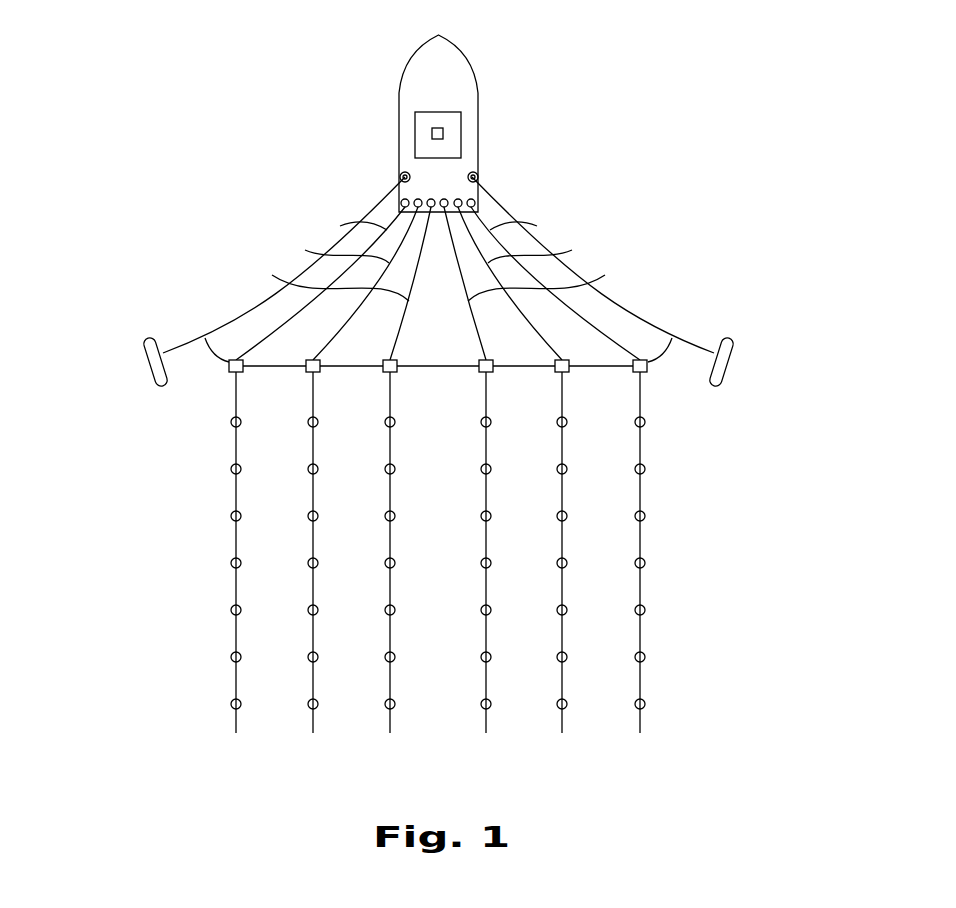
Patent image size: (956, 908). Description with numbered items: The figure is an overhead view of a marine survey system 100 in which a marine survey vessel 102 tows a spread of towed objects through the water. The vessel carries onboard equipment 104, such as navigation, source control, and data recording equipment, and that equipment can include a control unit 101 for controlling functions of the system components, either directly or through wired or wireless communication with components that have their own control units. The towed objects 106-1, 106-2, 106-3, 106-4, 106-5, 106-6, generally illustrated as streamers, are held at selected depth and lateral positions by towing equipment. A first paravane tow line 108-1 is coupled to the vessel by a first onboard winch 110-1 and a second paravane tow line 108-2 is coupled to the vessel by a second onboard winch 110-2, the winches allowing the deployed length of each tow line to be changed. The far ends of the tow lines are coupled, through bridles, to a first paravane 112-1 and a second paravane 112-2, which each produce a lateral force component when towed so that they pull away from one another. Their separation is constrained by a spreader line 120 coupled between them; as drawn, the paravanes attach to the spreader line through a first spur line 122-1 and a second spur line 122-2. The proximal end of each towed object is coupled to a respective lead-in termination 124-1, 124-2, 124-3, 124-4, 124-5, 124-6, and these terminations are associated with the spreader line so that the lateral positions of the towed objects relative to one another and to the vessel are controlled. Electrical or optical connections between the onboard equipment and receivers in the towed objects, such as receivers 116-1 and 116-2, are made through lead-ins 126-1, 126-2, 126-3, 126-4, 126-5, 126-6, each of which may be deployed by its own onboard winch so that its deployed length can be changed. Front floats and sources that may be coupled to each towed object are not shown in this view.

The marine survey system 100 is at (246, 57).
The control unit 101 is at (438, 127).
The marine survey vessel 102 is at (470, 67).
The onboard equipment 104 is at (461, 120).
The first onboard winch 110-1 is at (400, 175).
The second onboard winch 110-2 is at (478, 174).
The first paravane tow line 108-1 is at (383, 195).
The second paravane tow line 108-2 is at (495, 197).
The first paravane 112-1 is at (148, 354).
The second paravane 112-2 is at (735, 353).
The spreader line 120 is at (436, 364).
The first spur line 122-1 is at (219, 358).
The second spur line 122-2 is at (656, 358).
The lead-in termination 124-1 is at (241, 372).
The lead-in termination 124-2 is at (318, 372).
The lead-in termination 124-3 is at (395, 372).
The lead-in termination 124-4 is at (491, 372).
The lead-in termination 124-5 is at (567, 372).
The lead-in termination 124-6 is at (645, 372).
The lead-in 126-1 is at (340, 226).
The lead-in 126-2 is at (305, 250).
The lead-in 126-3 is at (272, 275).
The lead-in 126-4 is at (605, 275).
The lead-in 126-5 is at (572, 250).
The lead-in 126-6 is at (537, 226).
The towed object 106-1 is at (236, 729).
The towed object 106-2 is at (313, 729).
The towed object 106-3 is at (390, 729).
The towed object 106-4 is at (486, 729).
The towed object 106-5 is at (562, 729).
The towed object 106-6 is at (640, 729).
The receiver 116-1 is at (230, 424).
The receiver 116-2 is at (230, 470).